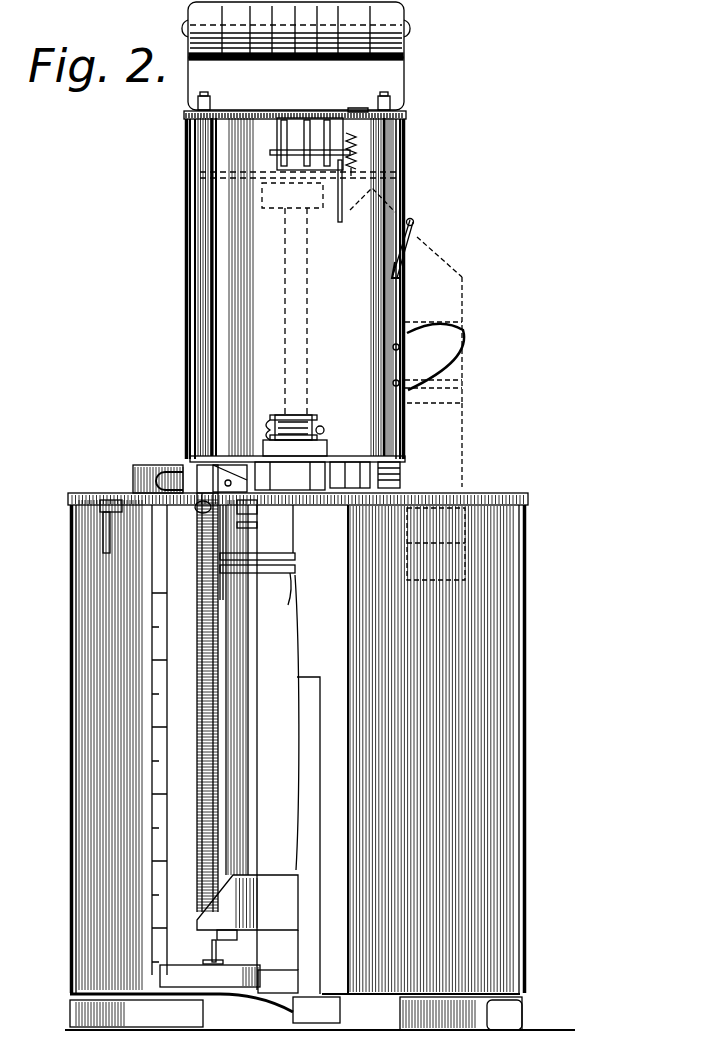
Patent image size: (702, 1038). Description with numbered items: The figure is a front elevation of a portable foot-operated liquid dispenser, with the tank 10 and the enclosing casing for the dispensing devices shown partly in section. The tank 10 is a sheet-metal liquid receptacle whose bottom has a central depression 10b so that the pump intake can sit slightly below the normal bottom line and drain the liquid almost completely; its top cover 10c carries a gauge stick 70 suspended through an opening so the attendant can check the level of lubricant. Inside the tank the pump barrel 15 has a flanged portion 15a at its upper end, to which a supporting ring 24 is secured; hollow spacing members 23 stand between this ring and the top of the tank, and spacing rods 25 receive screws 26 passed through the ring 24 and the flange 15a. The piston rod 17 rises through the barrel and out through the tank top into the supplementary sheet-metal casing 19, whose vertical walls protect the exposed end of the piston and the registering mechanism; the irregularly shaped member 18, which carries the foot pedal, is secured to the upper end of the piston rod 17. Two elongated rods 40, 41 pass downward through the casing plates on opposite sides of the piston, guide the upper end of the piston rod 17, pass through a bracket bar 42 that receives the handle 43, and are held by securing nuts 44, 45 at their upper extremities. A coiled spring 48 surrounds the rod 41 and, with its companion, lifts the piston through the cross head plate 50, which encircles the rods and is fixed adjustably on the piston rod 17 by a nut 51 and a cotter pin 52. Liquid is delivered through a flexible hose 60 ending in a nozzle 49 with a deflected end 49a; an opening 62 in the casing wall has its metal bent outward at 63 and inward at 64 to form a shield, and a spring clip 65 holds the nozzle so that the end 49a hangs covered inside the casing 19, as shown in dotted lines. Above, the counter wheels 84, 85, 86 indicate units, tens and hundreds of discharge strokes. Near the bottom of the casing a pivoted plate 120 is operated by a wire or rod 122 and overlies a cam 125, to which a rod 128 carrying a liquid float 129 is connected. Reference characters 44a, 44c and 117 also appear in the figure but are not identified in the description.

The tank 10 is at (490, 673).
The depression 10b is at (270, 1012).
The top cover 10c is at (88, 493).
The pump barrel 15 is at (254, 750).
The flanged portion 15a is at (287, 580).
The piston rod 17 is at (290, 262).
The irregularly shaped member 18 is at (330, 458).
The supplementary casing 19 is at (190, 180).
The hollow spacing members 23 is at (257, 544).
The supporting ring 24 is at (295, 555).
The spacing rods 25 is at (231, 621).
The screws 26 is at (233, 552).
The elongated rod 40 is at (205, 295).
The elongated rod 41 is at (384, 317).
The bracket bar 42 is at (405, 77).
The handle 43 is at (355, 56).
The securing nut 44 is at (213, 97).
The foot 44a is at (510, 1000).
The bracket 44c is at (347, 460).
The securing nut 45 is at (358, 110).
The coiled spring 48 is at (407, 470).
The discharge nozzle 49 is at (462, 277).
The deflected end 49a is at (417, 238).
The cross head plate 50 is at (247, 462).
The nut 51 is at (318, 440).
The cotter pin 52 is at (308, 415).
The flexible hose 60 is at (453, 567).
The opening 62 is at (413, 227).
The outwardly bent portion 63 is at (410, 222).
The inwardly bent portion 64 is at (400, 280).
The spring clip 65 is at (452, 350).
The gauge stick 70 is at (143, 467).
The units indicator 84 is at (327, 120).
The tens indicator 85 is at (307, 120).
The hundreds indicator 86 is at (283, 120).
The rack 117 is at (198, 606).
The plate 120 is at (257, 507).
The wire or rod 122 is at (183, 470).
The cam 125 is at (205, 515).
The rod 128 is at (257, 527).
The liquid float 129 is at (210, 975).